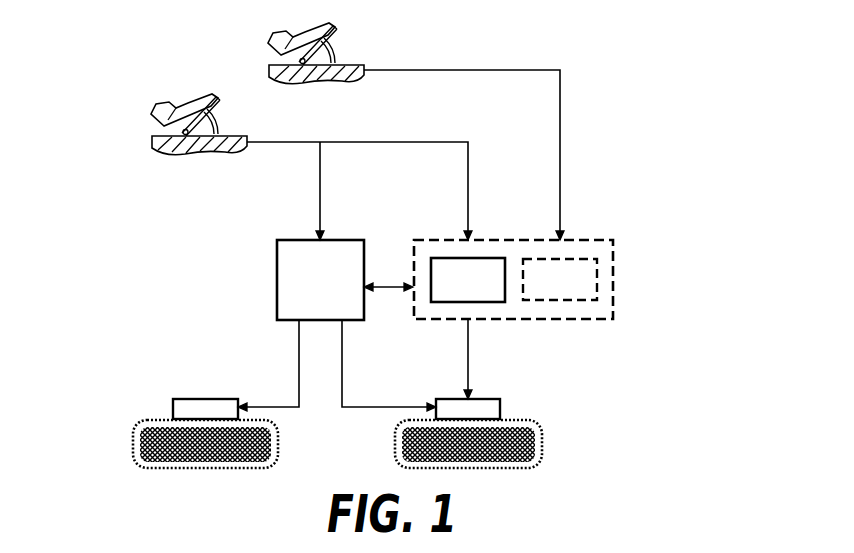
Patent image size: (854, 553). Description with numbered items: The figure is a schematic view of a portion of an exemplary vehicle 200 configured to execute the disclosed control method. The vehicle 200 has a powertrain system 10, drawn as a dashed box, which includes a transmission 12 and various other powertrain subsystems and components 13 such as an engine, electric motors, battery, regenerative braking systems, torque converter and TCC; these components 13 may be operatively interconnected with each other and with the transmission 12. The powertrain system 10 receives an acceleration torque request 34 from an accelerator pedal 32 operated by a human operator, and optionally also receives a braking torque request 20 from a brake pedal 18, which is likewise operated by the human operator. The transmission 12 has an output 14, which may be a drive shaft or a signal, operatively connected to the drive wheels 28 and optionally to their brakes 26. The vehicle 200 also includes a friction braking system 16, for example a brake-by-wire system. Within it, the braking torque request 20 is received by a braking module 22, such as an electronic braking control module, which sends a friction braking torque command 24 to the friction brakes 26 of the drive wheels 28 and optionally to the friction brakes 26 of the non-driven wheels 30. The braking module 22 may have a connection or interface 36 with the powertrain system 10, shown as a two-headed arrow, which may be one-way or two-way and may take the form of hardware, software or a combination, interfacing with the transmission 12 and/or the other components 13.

The powertrain system 10 is at (613, 292).
The transmission 12 is at (482, 293).
The other powertrain subsystems and components 13 is at (574, 293).
The output 14 is at (505, 356).
The friction braking system 16 is at (200, 267).
The brake pedal 18 is at (228, 115).
The braking torque request 20 is at (410, 138).
The braking module 22 is at (335, 291).
The friction braking torque command 24 is at (295, 390).
The friction brakes 26 is at (173, 410).
The drive wheels 28 is at (542, 440).
The non-driven wheels 30 is at (135, 440).
The accelerator pedal 32 is at (345, 44).
The acceleration torque request 34 is at (496, 65).
The connection or interface 36 is at (388, 284).
The vehicle 200 is at (606, 150).